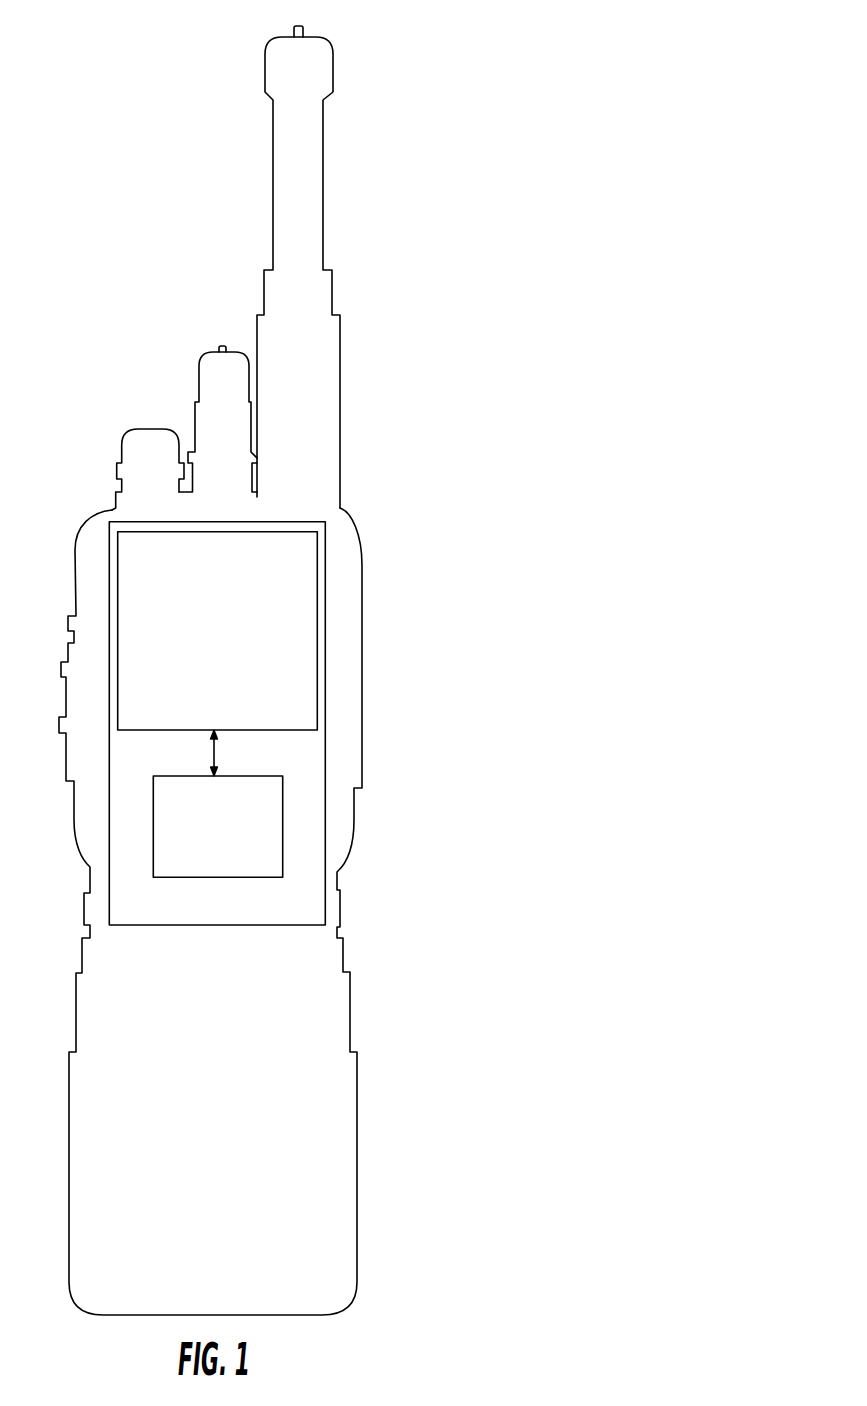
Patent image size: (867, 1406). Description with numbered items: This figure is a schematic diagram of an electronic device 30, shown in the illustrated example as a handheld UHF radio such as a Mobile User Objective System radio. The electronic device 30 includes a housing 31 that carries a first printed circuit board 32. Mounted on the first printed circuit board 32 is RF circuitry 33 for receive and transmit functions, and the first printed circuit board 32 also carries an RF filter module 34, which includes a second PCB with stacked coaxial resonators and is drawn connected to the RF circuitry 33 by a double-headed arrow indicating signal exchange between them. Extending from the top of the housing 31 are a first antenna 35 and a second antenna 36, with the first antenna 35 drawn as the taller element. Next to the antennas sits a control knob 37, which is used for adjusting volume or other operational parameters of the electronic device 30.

The electronic device 30 is at (425, 64).
The housing 31 is at (346, 968).
The first printed circuit board 32 is at (325, 703).
The RF circuitry 33 is at (283, 803).
The RF filter module 34 is at (317, 565).
The first antenna 35 is at (334, 290).
The second antenna 36 is at (217, 351).
The control knob 37 is at (133, 430).